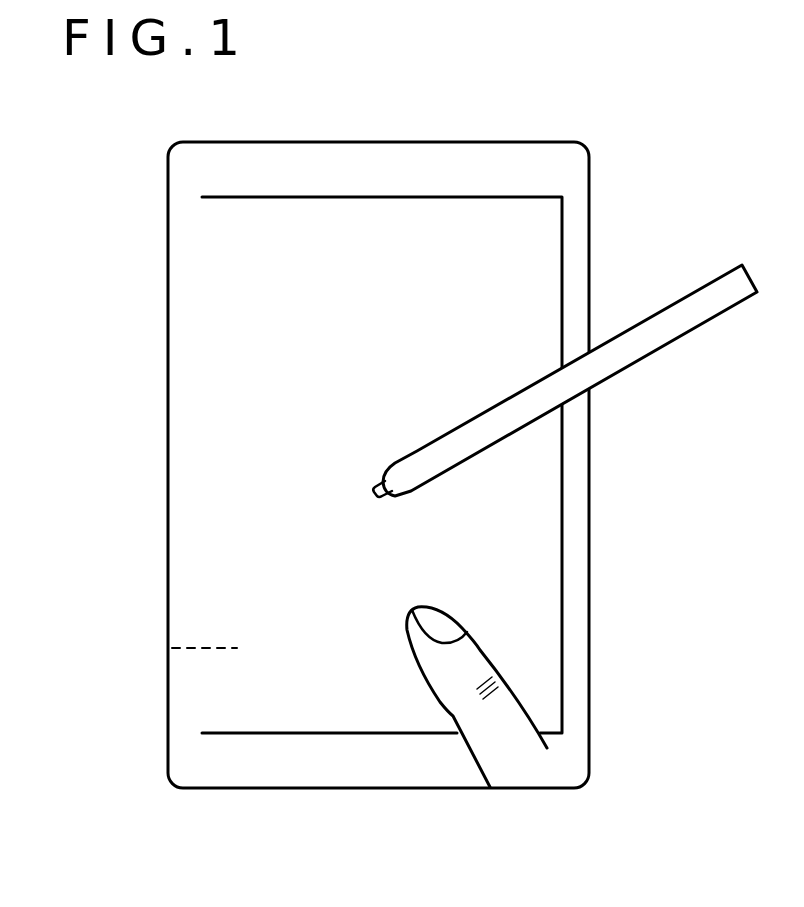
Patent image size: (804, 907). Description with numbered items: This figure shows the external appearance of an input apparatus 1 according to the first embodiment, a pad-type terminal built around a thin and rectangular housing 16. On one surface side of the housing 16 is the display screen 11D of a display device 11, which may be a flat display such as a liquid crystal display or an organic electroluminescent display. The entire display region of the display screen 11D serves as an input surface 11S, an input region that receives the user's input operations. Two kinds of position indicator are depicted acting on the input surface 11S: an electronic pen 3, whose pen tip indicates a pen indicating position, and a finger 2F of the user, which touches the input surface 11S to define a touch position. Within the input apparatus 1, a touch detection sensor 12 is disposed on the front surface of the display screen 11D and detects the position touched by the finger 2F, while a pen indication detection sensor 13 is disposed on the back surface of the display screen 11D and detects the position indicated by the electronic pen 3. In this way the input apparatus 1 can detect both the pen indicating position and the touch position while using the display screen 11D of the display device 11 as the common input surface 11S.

The input apparatus 1 is at (202, 173).
The housing 16 is at (590, 197).
The display device 11 is at (220, 335).
The input surface 11S is at (460, 220).
The display screen 11D is at (220, 480).
The touch detection sensor 12 is at (225, 557).
The pen indication detection sensor 13 is at (172, 648).
The electronic pen 3 is at (647, 345).
The finger 2F is at (462, 663).